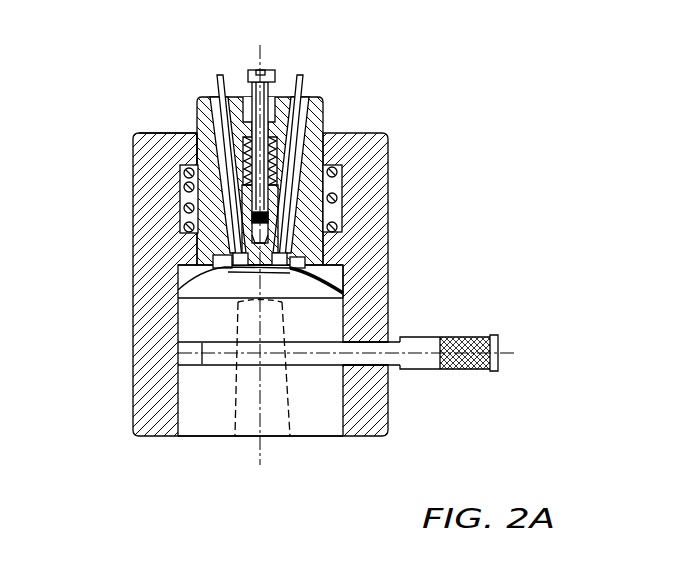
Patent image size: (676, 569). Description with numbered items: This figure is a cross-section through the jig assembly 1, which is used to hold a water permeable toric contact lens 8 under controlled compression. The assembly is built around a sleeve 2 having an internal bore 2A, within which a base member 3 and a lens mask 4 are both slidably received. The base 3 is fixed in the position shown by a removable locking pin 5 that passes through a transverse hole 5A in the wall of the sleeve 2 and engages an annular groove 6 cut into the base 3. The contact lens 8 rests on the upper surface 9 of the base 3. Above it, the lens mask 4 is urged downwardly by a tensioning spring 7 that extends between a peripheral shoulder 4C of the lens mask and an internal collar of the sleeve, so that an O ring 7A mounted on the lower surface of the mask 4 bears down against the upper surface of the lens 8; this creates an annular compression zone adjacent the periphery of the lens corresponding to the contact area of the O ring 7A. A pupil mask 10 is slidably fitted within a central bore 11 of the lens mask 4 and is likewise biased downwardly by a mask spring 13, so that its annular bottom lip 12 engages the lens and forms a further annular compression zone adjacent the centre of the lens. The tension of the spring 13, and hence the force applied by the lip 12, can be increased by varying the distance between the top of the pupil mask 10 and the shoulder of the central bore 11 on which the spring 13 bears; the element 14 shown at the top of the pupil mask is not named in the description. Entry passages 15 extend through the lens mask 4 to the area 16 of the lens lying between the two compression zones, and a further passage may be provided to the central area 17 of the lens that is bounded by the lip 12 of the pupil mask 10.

The jig assembly 1 is at (296, 253).
The sleeve 2 is at (377, 155).
The internal bore 2A is at (197, 130).
The base member 3 is at (320, 415).
The lens mask 4 is at (325, 128).
The peripheral shoulder 4C is at (202, 245).
The removable locking pin 5 is at (423, 345).
The transverse hole 5A is at (380, 367).
The annular groove 6 is at (287, 363).
The tensioning spring 7 is at (190, 231).
The O ring 7A is at (365, 268).
The water permeable toric contact lens 8 is at (215, 272).
The upper surface 9 is at (330, 287).
The pupil mask 10 is at (241, 250).
The central bore 11 is at (222, 128).
The annular bottom lip 12 is at (235, 267).
The mask spring 13 is at (278, 140).
The adjusting screw 14 is at (252, 84).
The entry passages 15 is at (231, 152).
The area of the lens 16 is at (213, 264).
The central area 17 is at (247, 266).